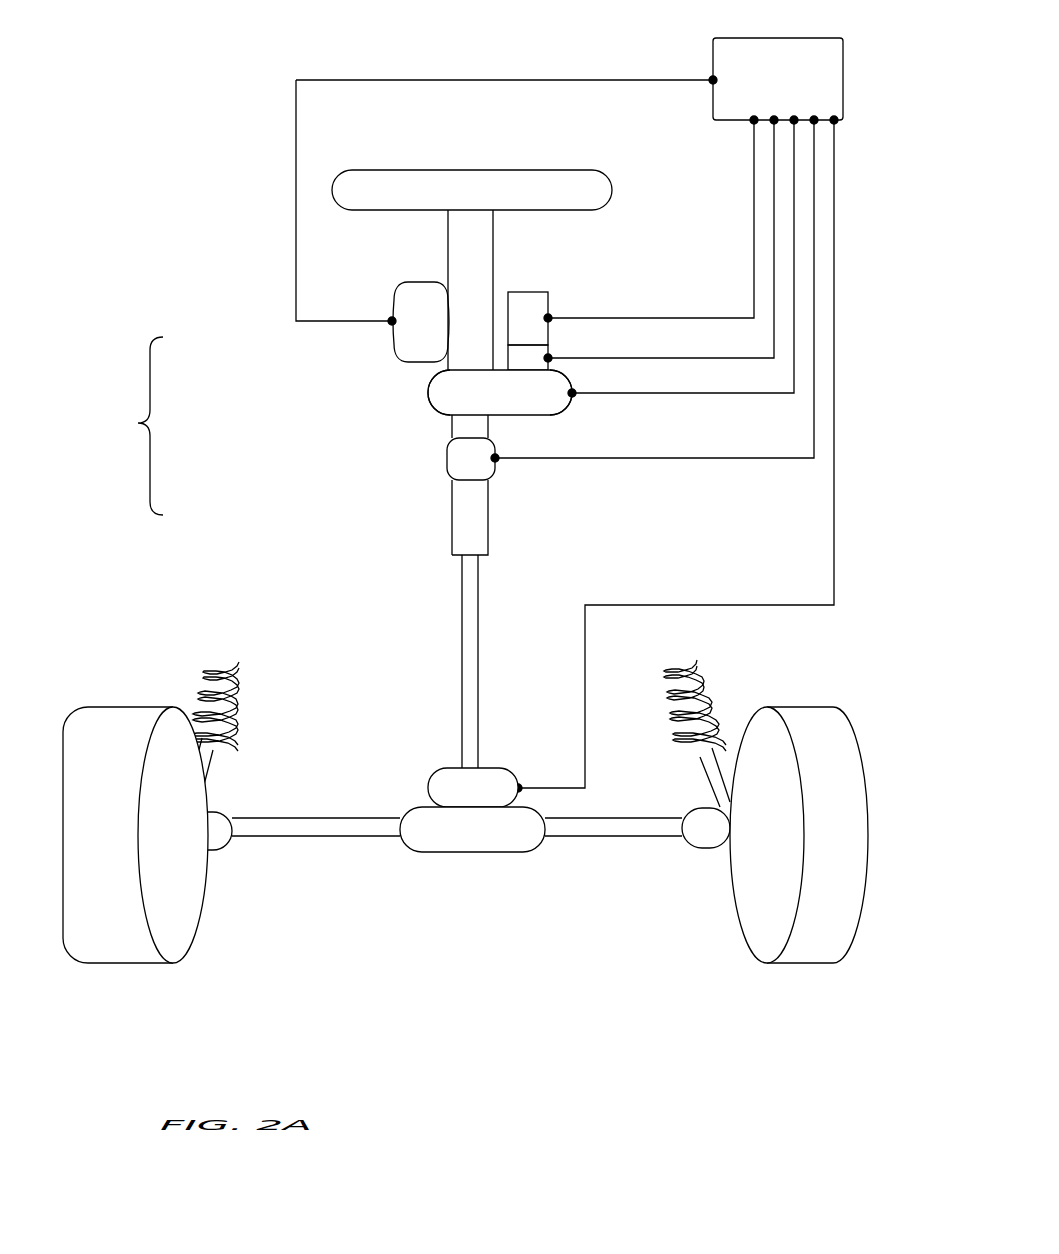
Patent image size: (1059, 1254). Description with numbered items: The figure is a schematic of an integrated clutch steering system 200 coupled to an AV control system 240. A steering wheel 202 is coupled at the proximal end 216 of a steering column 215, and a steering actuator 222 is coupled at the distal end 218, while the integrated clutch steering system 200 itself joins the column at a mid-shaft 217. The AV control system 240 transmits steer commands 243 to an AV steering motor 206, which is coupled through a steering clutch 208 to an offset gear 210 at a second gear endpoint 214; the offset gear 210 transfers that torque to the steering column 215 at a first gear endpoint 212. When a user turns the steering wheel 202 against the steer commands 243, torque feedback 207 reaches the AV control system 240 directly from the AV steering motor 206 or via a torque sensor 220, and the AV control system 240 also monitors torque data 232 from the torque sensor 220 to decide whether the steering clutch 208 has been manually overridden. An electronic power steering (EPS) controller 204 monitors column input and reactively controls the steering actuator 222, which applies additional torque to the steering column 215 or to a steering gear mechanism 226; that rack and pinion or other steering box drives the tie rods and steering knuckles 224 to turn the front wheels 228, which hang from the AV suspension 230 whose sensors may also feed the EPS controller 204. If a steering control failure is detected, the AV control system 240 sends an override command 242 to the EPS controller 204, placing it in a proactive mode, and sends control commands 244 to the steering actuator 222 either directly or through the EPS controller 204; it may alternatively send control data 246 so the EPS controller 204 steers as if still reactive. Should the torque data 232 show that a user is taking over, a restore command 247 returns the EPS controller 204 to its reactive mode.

The integrated clutch steering system 200 is at (462, 571).
The steering wheel 202 is at (472, 168).
The electronic power steering (EPS) controller 204 is at (410, 341).
The AV steering motor 206 is at (528, 320).
The torque feedback 207 is at (702, 219).
The steering clutch 208 is at (550, 350).
The offset gear 210 is at (457, 393).
The first gear endpoint 212 is at (440, 413).
The second gear endpoint 214 is at (567, 407).
The steering column 215 is at (275, 489).
The proximal end 216 is at (417, 250).
The mid-shaft 217 is at (275, 422).
The distal end 218 is at (424, 709).
The torque sensor 220 is at (475, 462).
The steering actuator 222 is at (462, 785).
The tie rods and steering knuckles 224 is at (272, 837).
The steering gear mechanism 226 is at (472, 842).
The front wheels 228 is at (762, 997).
The AV suspension 230 is at (200, 645).
The torque data 232 is at (652, 322).
The AV control system 240 is at (776, 81).
The override command 242 is at (302, 202).
The steer commands 243 is at (637, 286).
The control commands 244 is at (674, 456).
The control data 246 is at (325, 72).
The restore command 247 is at (532, 45).